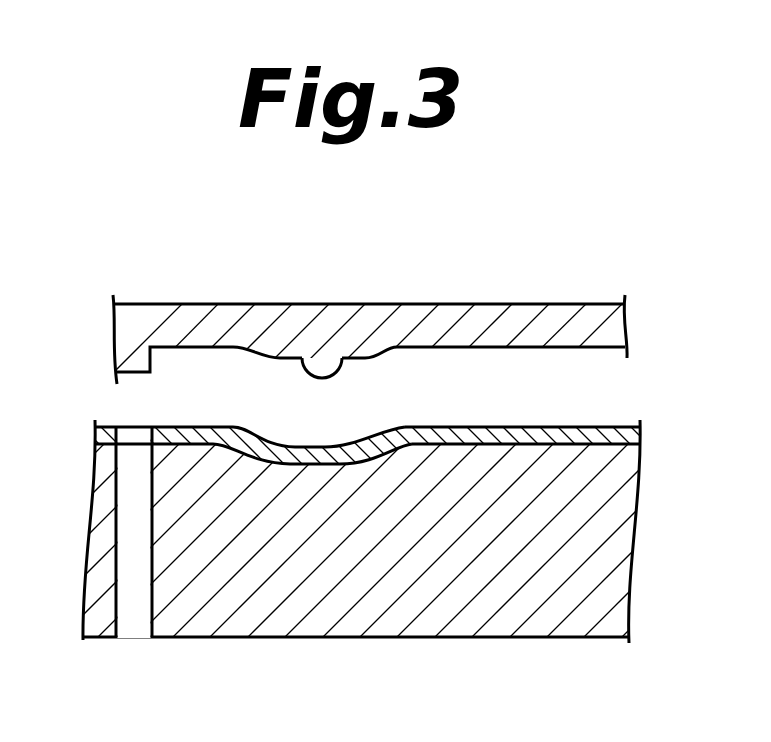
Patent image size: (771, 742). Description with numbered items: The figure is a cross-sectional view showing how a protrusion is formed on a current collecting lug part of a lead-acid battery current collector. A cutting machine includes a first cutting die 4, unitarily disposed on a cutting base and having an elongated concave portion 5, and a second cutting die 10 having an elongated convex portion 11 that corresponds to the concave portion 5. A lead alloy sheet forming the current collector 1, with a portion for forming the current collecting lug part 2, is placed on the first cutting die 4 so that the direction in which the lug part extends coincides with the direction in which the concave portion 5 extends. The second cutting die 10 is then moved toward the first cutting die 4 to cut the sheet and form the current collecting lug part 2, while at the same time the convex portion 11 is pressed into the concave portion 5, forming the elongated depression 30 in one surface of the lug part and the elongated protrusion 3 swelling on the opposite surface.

The current collector 1 is at (610, 425).
The current collecting lug part 2 is at (167, 432).
The protrusion 3 is at (285, 447).
The first cutting die 4 is at (425, 628).
The concave portion 5 is at (313, 465).
The second cutting die 10 is at (510, 322).
The convex portion 11 is at (346, 356).
The depression 30 is at (338, 445).